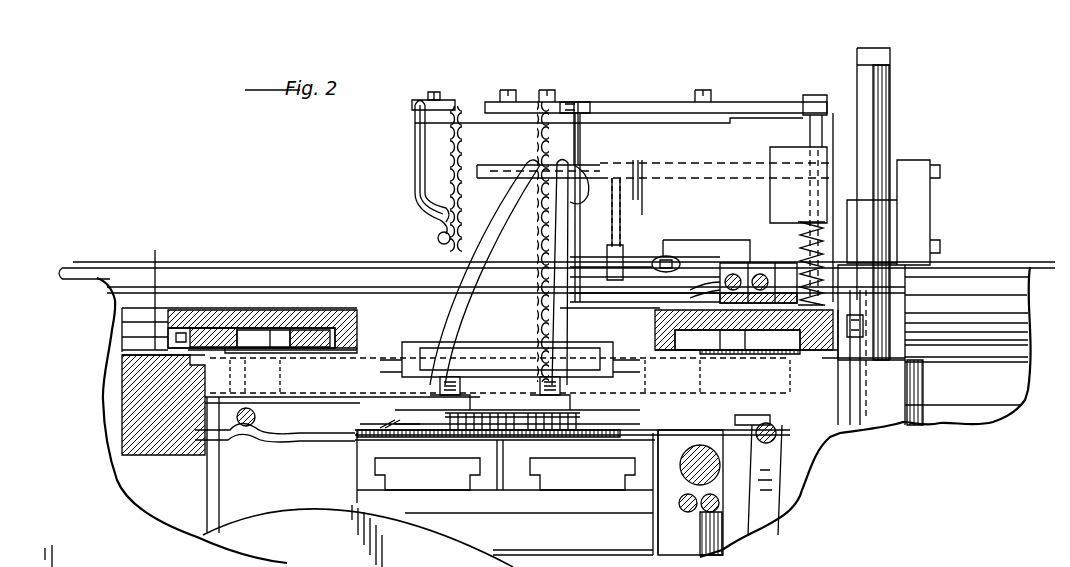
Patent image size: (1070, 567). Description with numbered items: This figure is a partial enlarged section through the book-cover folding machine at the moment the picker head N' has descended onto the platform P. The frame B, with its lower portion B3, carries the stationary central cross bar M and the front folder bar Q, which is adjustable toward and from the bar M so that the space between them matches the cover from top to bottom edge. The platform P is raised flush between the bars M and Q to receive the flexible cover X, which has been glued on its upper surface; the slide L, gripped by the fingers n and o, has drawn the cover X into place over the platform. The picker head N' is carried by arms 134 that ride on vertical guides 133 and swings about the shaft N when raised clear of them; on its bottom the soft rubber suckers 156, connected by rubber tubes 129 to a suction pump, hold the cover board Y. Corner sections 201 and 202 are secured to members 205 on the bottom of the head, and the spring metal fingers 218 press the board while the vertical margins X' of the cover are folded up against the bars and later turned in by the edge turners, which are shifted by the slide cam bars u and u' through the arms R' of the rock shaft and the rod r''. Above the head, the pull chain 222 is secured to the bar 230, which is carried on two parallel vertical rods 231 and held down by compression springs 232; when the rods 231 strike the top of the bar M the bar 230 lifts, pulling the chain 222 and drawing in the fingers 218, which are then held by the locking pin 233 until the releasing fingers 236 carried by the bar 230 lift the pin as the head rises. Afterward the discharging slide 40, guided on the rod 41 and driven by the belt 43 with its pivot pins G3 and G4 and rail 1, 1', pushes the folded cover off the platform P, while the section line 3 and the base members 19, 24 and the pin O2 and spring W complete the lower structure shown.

The rail 1 is at (85, 247).
The rail end 1' is at (1018, 247).
The section line 3 is at (178, 239).
The base block 19 is at (430, 471).
The base block 24 is at (582, 474).
The discharging slide 40 is at (340, 433).
The rod 41 is at (685, 485).
The belt 43 is at (692, 512).
The rubber tubes 129 is at (563, 263).
The vertical guides 133 is at (880, 125).
The arms 134 is at (895, 225).
The soft rubber suckers 156 is at (470, 432).
The corner section 201 is at (595, 400).
The corner section 202 is at (410, 400).
The members 205 is at (645, 392).
The spring metal fingers 218 is at (540, 432).
The pull chain 222 is at (540, 140).
The bar 230 is at (620, 108).
The parallel vertical rods 231 is at (812, 128).
The compression springs 232 is at (800, 243).
The locking pin 233 is at (560, 384).
The releasing fingers 236 is at (450, 240).
The frame B is at (288, 288).
The frame block B3 is at (150, 410).
The link G3 is at (780, 495).
The pivot pin G4 is at (775, 437).
The slide L is at (752, 263).
The stationary cross bar M is at (655, 325).
The shaft N is at (970, 191).
The picker head N' is at (701, 207).
The pin O2 is at (246, 426).
The platform P is at (355, 468).
The adjustable folder bar Q is at (245, 320).
The arms R' is at (189, 465).
The spring W is at (392, 425).
The flexible cover X is at (525, 331).
The vertical margins X' is at (527, 404).
The cover-board Y is at (427, 473).
The finger n is at (733, 274).
The finger o is at (760, 274).
The lever r'' is at (289, 411).
The slide cam-bar u is at (766, 395).
The slide cam-bar u' is at (213, 286).